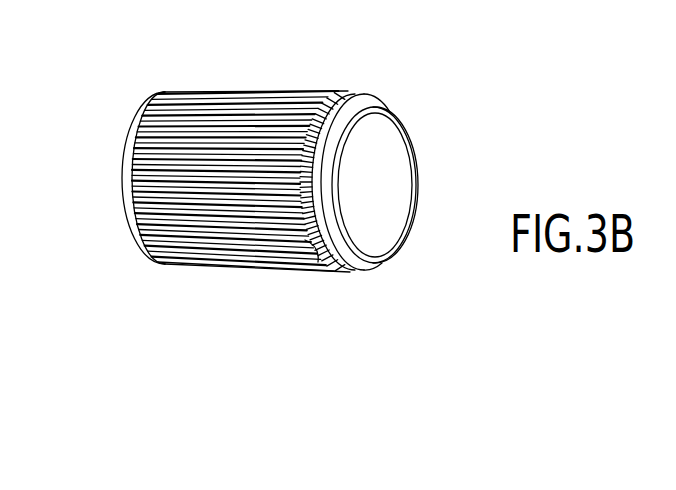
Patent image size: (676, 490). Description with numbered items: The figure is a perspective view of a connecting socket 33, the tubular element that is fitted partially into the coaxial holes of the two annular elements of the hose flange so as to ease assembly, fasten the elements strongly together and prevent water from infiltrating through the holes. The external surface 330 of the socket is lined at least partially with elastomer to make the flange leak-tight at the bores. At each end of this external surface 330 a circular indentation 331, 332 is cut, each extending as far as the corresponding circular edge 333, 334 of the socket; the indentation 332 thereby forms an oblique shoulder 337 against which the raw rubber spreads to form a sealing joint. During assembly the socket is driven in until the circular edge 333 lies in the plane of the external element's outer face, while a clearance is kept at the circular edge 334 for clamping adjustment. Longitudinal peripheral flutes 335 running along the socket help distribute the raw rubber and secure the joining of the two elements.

The connecting socket 33 is at (268, 91).
The external surface 330 is at (206, 90).
The circular indentation 331 is at (133, 138).
The circular indentation 332 is at (345, 95).
The circular edge 333 is at (127, 206).
The circular edge 334 is at (390, 106).
The longitudinal peripheral flute 335 is at (313, 262).
The oblique shoulder 337 is at (344, 272).